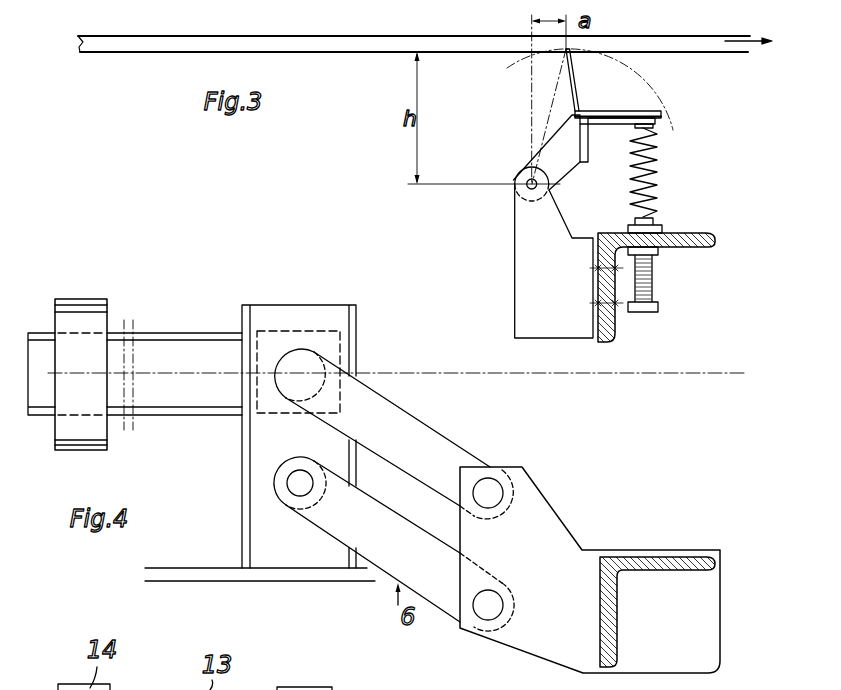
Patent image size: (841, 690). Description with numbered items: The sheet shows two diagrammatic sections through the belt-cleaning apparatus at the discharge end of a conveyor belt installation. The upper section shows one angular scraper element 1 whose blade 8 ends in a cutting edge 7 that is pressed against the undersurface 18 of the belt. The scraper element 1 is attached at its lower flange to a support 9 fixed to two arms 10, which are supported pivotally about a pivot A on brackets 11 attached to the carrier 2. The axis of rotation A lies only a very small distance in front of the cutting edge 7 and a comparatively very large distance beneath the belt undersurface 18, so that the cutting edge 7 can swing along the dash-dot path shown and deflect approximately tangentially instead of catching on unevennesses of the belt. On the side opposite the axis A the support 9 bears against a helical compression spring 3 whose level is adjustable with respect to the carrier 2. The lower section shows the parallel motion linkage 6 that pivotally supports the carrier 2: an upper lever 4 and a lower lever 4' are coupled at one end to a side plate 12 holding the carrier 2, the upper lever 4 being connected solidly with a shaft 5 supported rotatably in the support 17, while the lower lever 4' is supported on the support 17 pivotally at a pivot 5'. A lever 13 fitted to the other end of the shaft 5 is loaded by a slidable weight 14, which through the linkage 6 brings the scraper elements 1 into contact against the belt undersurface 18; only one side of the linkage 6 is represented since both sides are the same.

In FIG. 3, the scraper element 1 is at (589, 99).
In FIG. 3, the carrier 2 is at (695, 249).
In FIG. 4, the carrier 2 is at (697, 557).
In FIG. 3, the helical compression spring 3 is at (658, 170).
In FIG. 4, the upper lever 4 is at (399, 435).
In FIG. 4, the lower lever 4' is at (400, 546).
In FIG. 4, the shaft 5 is at (262, 399).
In FIG. 4, the pivot 5' is at (260, 488).
In FIG. 3, the parallel motion linkage 6 is at (302, 47).
In FIG. 3, the cutting edge 7 is at (578, 89).
In FIG. 3, the blade 8 is at (566, 85).
In FIG. 3, the support 9 is at (663, 118).
In FIG. 3, the arm 10 is at (565, 167).
In FIG. 3, the bracket 11 is at (527, 276).
In FIG. 4, the side plate 12 is at (563, 524).
In FIG. 4, the lever 13 is at (190, 347).
In FIG. 4, the slidable weight 14 is at (85, 308).
In FIG. 4, the support 17 is at (332, 313).
In FIG. 4, the undersurface of the belt 18 is at (717, 372).